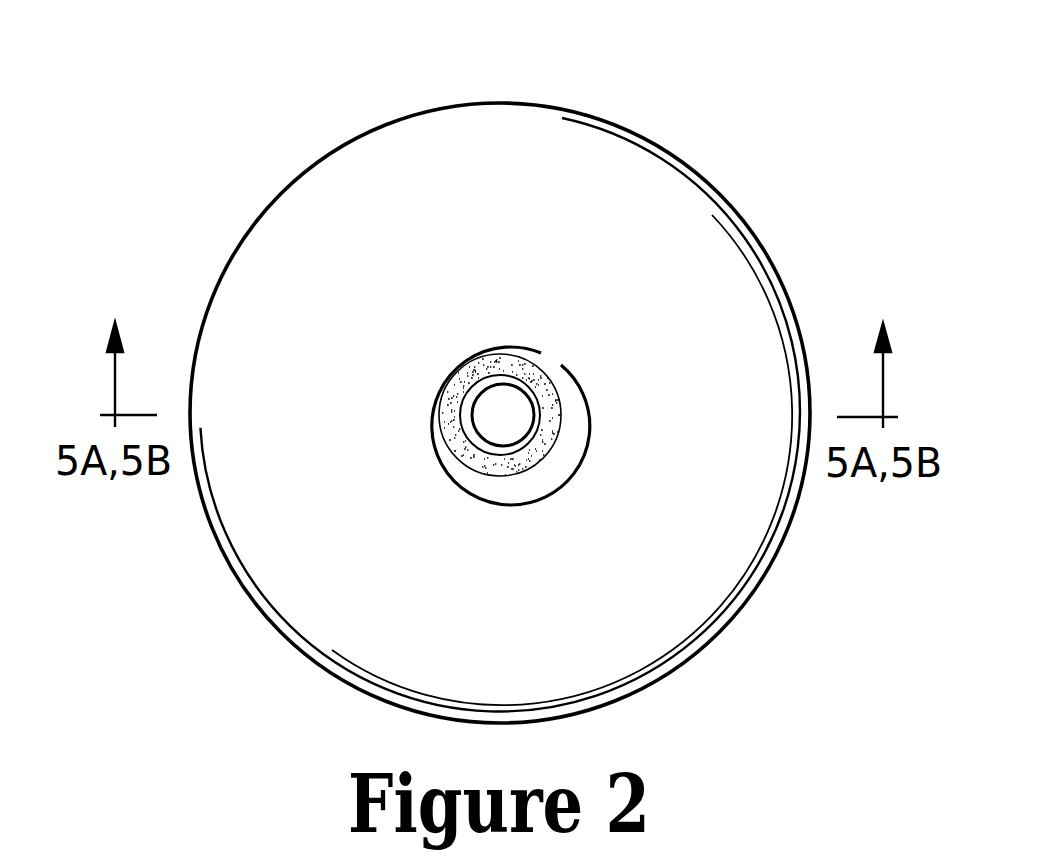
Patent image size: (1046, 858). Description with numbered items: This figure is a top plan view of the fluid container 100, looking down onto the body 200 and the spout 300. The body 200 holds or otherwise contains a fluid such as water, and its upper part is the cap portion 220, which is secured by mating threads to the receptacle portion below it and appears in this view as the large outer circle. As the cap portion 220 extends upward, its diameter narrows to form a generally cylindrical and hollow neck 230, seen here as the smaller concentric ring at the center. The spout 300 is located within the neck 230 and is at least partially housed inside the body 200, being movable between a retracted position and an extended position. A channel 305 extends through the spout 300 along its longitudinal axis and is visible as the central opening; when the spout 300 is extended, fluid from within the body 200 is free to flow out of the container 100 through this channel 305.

The fluid container 100 is at (485, 361).
The body 200 is at (514, 361).
The cap portion 220 is at (502, 104).
The neck 230 is at (468, 377).
The spout 300 is at (548, 364).
The channel 305 is at (475, 430).